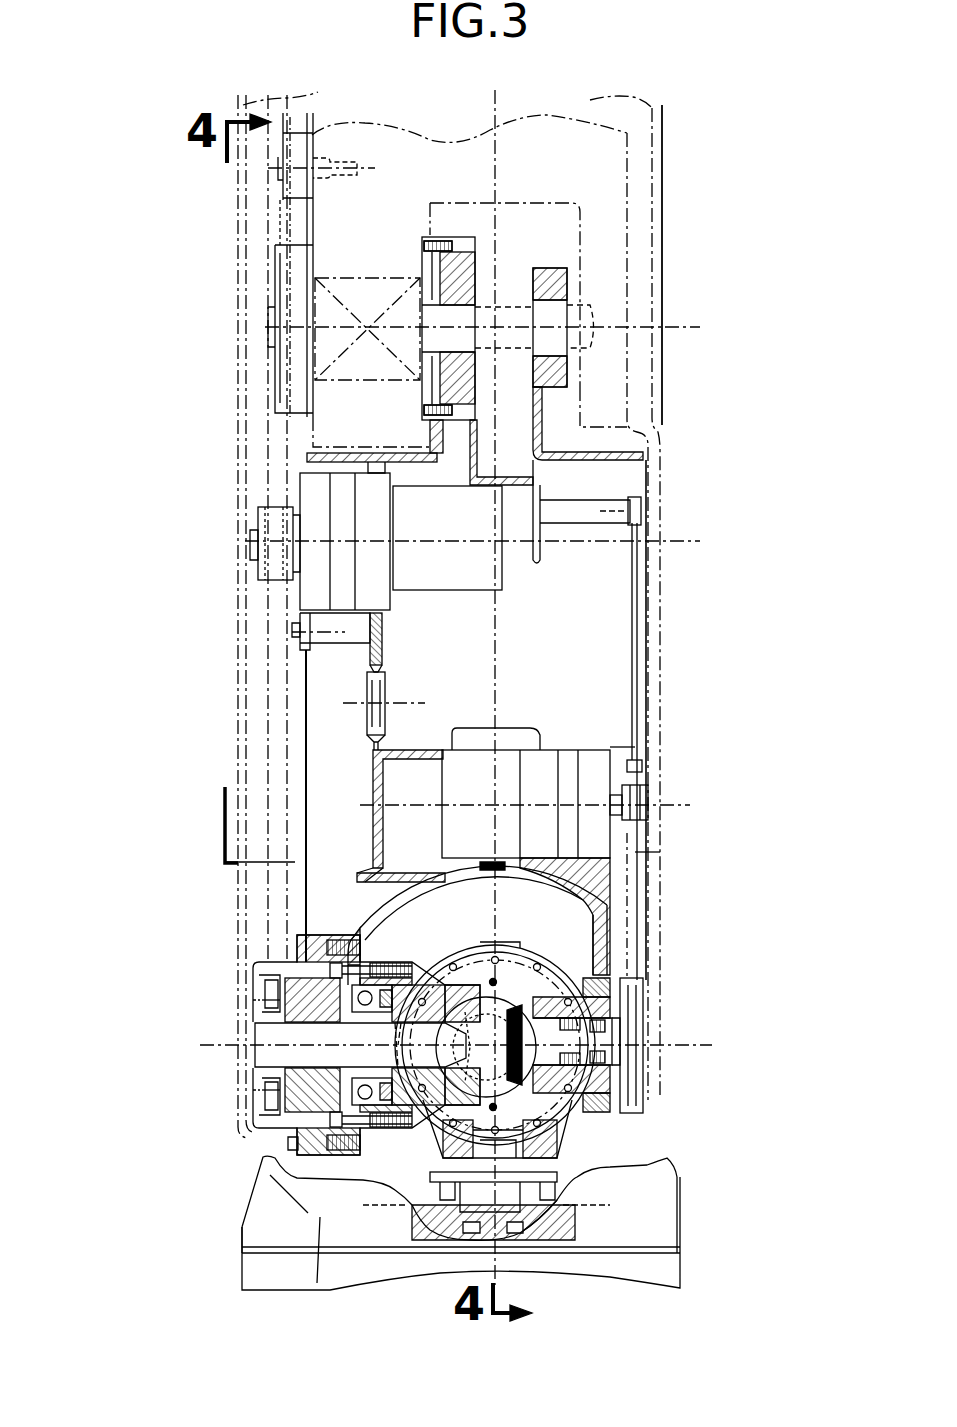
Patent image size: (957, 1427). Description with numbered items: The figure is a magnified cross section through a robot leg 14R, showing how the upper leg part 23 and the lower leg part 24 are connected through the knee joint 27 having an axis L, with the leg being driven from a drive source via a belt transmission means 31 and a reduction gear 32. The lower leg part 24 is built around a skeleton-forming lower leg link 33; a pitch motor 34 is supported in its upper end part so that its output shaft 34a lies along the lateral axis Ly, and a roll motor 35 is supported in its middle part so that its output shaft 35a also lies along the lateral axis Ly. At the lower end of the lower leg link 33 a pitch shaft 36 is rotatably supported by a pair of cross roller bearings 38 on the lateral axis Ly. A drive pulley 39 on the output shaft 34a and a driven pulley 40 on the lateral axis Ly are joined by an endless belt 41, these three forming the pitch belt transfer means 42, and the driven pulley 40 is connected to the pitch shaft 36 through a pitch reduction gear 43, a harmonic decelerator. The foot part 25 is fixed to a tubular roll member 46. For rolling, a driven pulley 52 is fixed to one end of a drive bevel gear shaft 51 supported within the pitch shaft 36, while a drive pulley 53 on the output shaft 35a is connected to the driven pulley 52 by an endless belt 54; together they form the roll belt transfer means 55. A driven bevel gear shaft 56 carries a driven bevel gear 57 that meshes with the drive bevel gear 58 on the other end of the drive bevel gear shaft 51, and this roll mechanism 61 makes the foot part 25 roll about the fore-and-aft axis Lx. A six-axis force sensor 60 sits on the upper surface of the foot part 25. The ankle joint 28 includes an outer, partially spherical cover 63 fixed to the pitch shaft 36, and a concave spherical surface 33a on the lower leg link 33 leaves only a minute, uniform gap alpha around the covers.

The right rear frame 14R is at (698, 437).
The upper leg part 23 is at (684, 192).
The lower leg part 24 is at (680, 682).
The foot part 25 is at (696, 1194).
The knee joint 27 is at (535, 257).
The ankle joint 28 is at (417, 918).
The belt transmission means 31 is at (279, 218).
The reduction gear 32 is at (370, 275).
The lower leg link 33 is at (367, 749).
The concave spherical surface 33a is at (494, 862).
The pitch motor 34 is at (466, 592).
The output shaft 34a is at (346, 448).
The roll motor 35 is at (506, 750).
The output shaft 35a is at (613, 792).
The pitch shaft 36 is at (428, 1108).
The cross roller bearings 38 is at (333, 948).
The drive pulley 39 is at (258, 508).
The driven pulley 40 is at (267, 1113).
The endless belt 41 is at (277, 683).
The pitch belt transfer means 42 is at (266, 748).
The pitch reduction gear 43 is at (370, 1141).
The roll member 46 is at (583, 1160).
The drive bevel gear shaft 51 is at (557, 1030).
The driven pulley 52 is at (645, 1008).
The drive pulley 53 is at (645, 794).
The endless belt 54 is at (660, 855).
The roll belt transfer means 55 is at (634, 912).
The driven bevel gear shaft 56 is at (388, 1045).
The driven bevel gear 57 is at (543, 1178).
The drive bevel gear 58 is at (513, 1003).
The six-axis force sensor 60 is at (493, 1206).
The roll mechanism 61 is at (478, 915).
The outer, partially spherical cover 63 is at (395, 892).
The axis L is at (677, 325).
The fore-and-aft axis Lx is at (493, 1040).
The lateral axis Ly is at (210, 1045).
The gap alpha is at (537, 880).